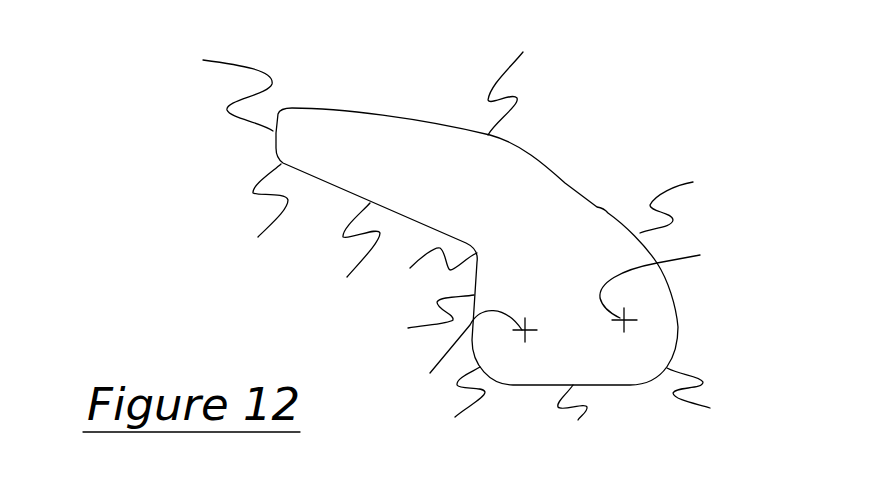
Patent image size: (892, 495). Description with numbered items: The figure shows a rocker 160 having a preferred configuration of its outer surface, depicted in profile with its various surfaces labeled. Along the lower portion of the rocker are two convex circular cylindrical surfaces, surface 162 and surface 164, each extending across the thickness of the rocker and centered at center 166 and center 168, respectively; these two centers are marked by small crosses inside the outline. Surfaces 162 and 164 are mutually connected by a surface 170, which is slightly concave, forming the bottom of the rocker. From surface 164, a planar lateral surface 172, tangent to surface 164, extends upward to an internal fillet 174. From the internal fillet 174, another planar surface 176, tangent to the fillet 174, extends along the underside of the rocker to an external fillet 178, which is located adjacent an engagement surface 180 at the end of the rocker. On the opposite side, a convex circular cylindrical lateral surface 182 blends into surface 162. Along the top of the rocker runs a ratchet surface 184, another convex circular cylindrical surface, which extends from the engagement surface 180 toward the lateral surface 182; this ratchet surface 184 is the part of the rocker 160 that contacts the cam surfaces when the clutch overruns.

The rocker 160 is at (412, 170).
The surface 162 is at (713, 396).
The surface 164 is at (444, 408).
The center 166 is at (674, 287).
The center 168 is at (461, 355).
The surface 170 is at (566, 426).
The planar lateral surface 172 is at (417, 319).
The internal fillet 174 is at (428, 274).
The planar surface 176 is at (341, 254).
The external fillet 178 is at (251, 215).
The engagement surface 180 is at (215, 88).
The convex circular cylindrical lateral surface 182 is at (689, 201).
The ratchet surface 184 is at (526, 82).